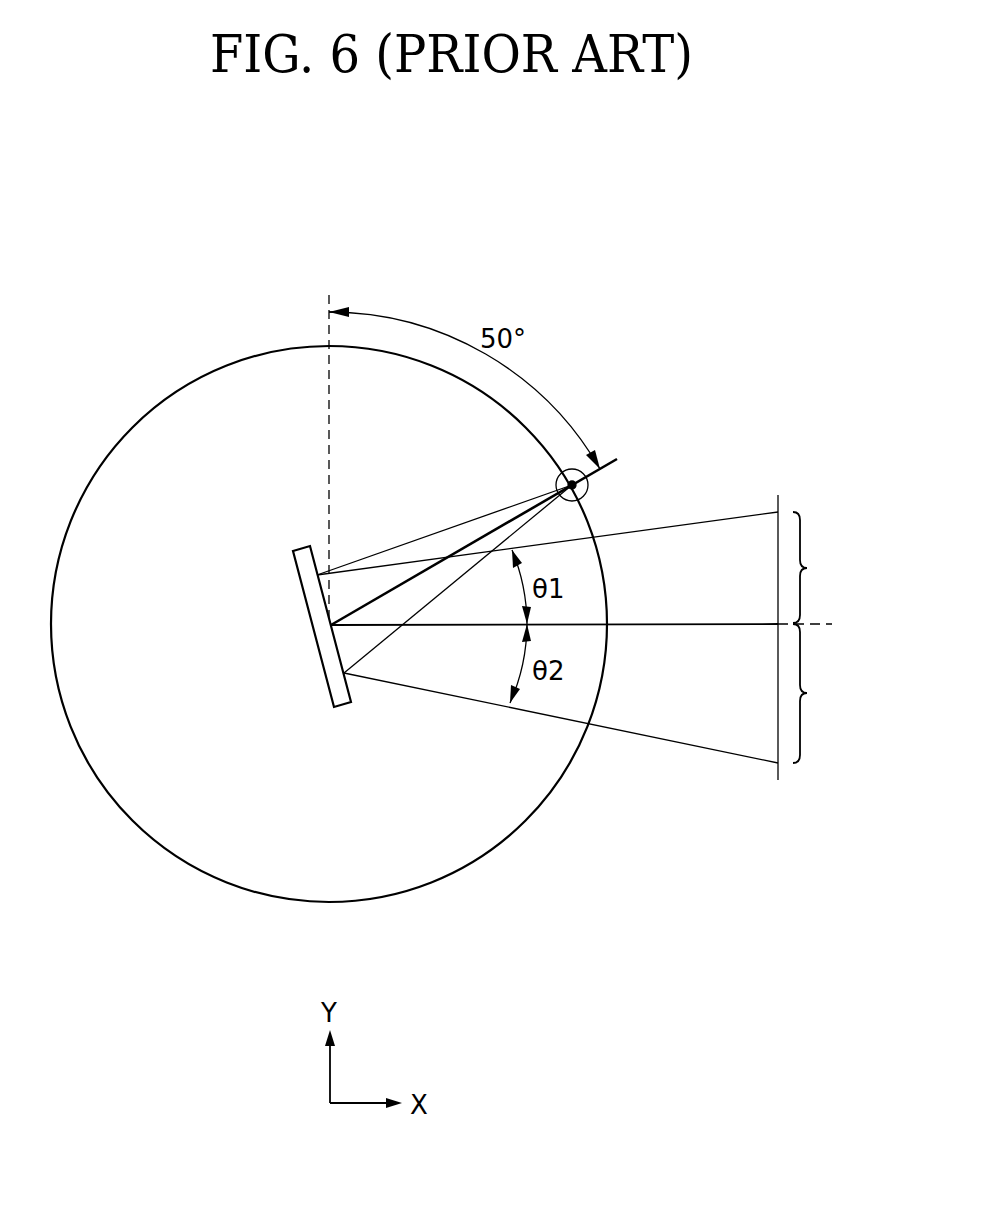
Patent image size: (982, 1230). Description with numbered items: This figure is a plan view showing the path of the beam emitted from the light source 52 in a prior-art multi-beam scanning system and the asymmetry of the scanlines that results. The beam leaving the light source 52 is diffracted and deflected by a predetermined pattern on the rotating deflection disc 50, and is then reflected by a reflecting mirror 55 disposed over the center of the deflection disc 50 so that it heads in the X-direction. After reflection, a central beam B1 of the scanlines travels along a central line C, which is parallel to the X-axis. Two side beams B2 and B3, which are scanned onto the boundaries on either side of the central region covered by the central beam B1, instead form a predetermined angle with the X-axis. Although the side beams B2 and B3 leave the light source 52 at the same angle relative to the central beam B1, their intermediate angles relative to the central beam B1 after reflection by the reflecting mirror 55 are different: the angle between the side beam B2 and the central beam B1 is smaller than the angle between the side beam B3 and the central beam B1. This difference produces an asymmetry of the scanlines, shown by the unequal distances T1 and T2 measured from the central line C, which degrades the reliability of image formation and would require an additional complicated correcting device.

The rotating deflection disc 50 is at (128, 802).
The light source 52 is at (588, 487).
The reflecting mirror 55 is at (306, 601).
The central beam B1 is at (653, 626).
The side beam B2 is at (712, 522).
The side beam B3 is at (713, 745).
The distance from the central line T1 is at (820, 567).
The distance from the central line T2 is at (820, 693).
The central line C is at (830, 624).